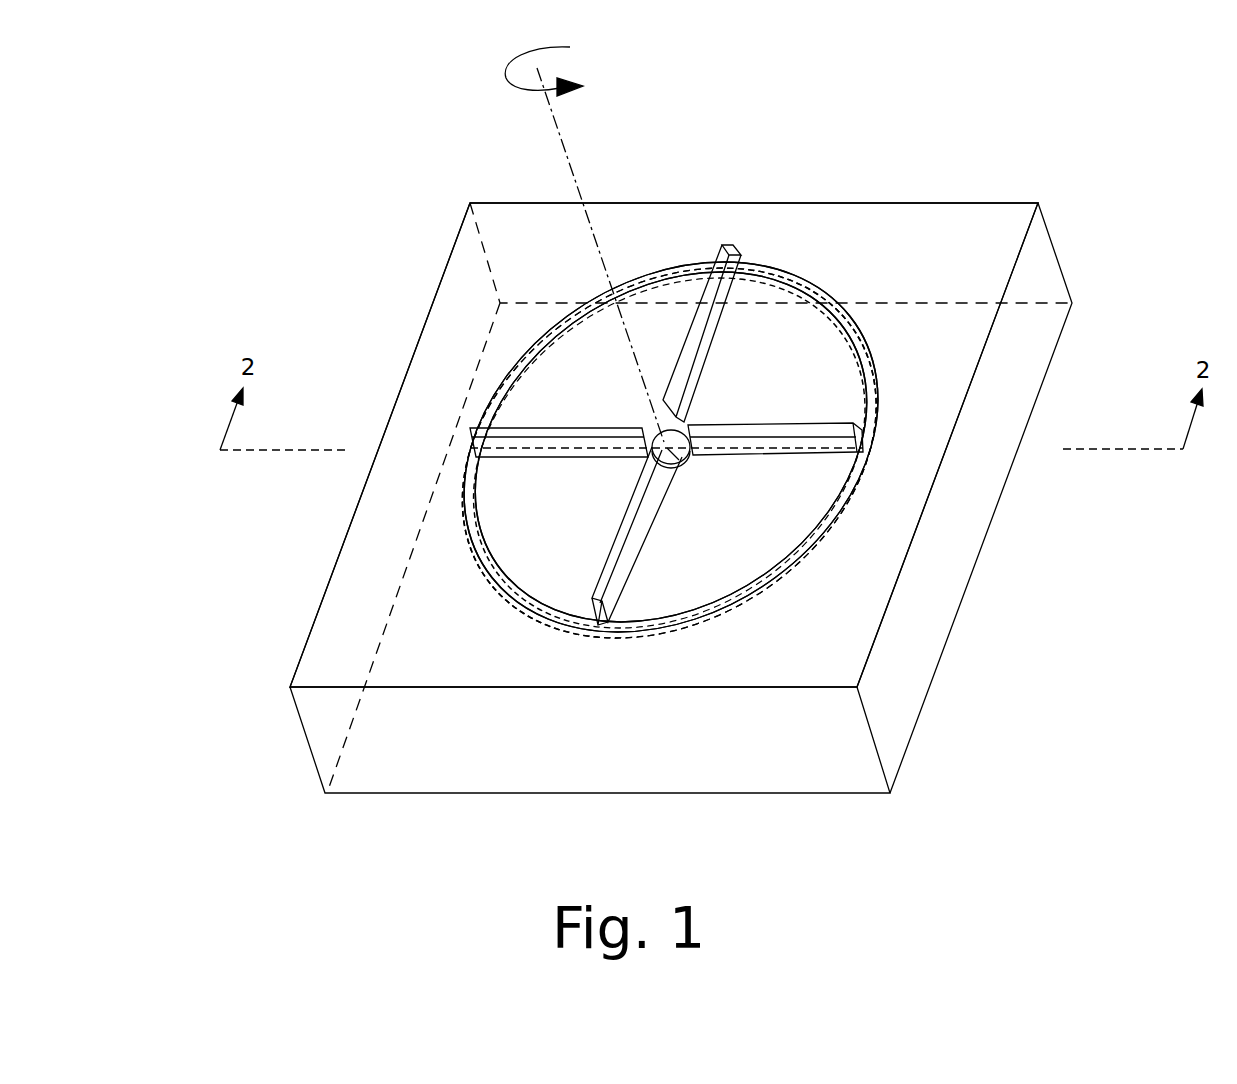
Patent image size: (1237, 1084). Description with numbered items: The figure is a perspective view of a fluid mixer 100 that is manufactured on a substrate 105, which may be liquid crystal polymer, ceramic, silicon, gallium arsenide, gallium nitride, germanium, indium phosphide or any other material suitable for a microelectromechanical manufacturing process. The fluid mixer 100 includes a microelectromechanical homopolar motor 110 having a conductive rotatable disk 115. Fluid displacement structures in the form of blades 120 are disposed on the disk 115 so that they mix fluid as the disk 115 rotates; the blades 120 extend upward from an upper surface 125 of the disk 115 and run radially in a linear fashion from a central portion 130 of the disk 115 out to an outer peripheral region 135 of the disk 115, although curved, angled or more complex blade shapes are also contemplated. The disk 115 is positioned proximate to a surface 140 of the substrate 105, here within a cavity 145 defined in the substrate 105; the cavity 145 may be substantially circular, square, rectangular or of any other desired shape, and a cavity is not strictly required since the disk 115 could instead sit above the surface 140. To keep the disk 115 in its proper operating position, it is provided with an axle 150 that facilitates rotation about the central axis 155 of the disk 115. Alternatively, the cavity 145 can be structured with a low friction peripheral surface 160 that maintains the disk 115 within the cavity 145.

The fluid mixer 100 is at (651, 440).
The substrate 105 is at (1037, 263).
The microelectromechanical homopolar motor 110 is at (823, 255).
The conductive rotatable disk 115 is at (797, 532).
The fluid displacement structures (blades) 120 is at (727, 427).
The upper surface of the disk 125 is at (793, 502).
The central portion of the disk 130 is at (684, 457).
The outer peripheral region of the disk 135 is at (868, 403).
The surface of the substrate 140 is at (963, 235).
The cavity 145 is at (683, 288).
The axle 150 is at (676, 455).
The central axis 155 is at (565, 147).
The low friction peripheral surface 160 is at (567, 307).